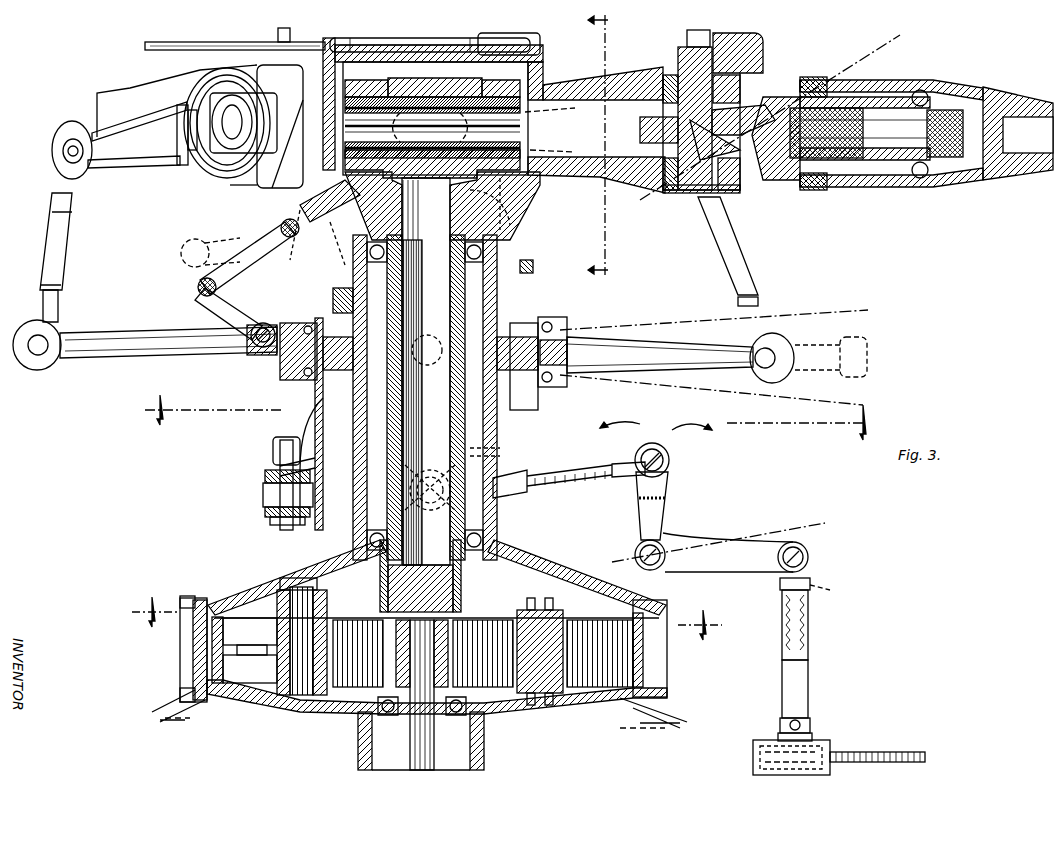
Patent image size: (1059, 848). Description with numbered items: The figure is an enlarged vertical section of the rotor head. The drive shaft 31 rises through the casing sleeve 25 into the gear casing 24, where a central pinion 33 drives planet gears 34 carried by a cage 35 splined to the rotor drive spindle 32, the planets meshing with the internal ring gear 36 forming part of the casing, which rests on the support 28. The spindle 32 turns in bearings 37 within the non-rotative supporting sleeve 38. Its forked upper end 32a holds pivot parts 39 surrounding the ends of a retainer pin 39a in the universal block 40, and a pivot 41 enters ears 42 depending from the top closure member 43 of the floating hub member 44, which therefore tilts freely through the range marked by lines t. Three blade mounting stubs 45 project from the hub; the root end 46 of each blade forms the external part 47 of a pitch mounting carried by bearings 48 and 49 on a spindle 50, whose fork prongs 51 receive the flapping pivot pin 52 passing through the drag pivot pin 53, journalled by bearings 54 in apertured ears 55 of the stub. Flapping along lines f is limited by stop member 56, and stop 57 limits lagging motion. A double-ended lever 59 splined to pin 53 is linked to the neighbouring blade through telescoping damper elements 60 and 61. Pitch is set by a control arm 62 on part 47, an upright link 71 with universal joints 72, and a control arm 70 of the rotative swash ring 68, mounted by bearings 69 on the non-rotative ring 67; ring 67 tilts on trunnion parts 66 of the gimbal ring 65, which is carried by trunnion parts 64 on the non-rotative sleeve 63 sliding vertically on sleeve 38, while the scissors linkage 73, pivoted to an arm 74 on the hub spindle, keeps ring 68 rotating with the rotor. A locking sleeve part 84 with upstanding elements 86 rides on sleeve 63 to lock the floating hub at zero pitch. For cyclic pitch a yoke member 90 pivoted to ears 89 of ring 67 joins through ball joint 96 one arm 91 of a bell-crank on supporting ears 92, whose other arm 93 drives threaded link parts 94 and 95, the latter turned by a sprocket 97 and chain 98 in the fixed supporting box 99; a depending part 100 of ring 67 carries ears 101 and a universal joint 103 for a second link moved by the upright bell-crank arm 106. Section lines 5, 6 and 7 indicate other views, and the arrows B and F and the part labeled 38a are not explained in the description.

The gear casing 24 is at (235, 590).
The casing sleeve 25 is at (358, 750).
The support 28 is at (168, 700).
The shaft 31 is at (410, 760).
The rotor drive spindle 32 is at (445, 378).
The forks 32a is at (325, 80).
The central pinion 33 is at (396, 662).
The planet gears 34 is at (220, 690).
The cage 35 is at (325, 592).
The internal ring gear 36 is at (633, 658).
The bearings 37 is at (500, 256).
The non-rotative supporting sleeve 38 is at (470, 485).
The cap housing 38a is at (543, 70).
The pivot parts 39 is at (405, 85).
The retainer pin 39a is at (500, 205).
The universal block 40 is at (530, 190).
The pivot 41 is at (470, 90).
The ears 42 is at (440, 90).
The top closure member 43 is at (385, 48).
The floating hub member 44 is at (283, 178).
The blade mounting stubs 45 is at (580, 100).
The root end of the blade 46 is at (118, 88).
The external part of pitch mounting 47 is at (942, 182).
The bearing 48 is at (825, 85).
The bearing 49 is at (922, 90).
The spindle 50 is at (865, 178).
The fork prongs 51 is at (750, 150).
The flapping pivot pin 52 is at (230, 140).
The drag pivot pin 53 is at (690, 70).
The bearings 54 is at (740, 95).
The apertured ears 55 is at (745, 75).
The stop member 56 is at (768, 130).
The stop 57 is at (640, 130).
The double-ended lever 59 is at (228, 44).
The telescoping element 60 is at (435, 40).
The telescoping element 61 is at (522, 40).
The control arm 62 is at (133, 153).
The non-rotative sleeve 63 is at (327, 410).
The trunnion parts 64 is at (342, 372).
The gimbal ring 65 is at (322, 322).
The trunnion parts 66 is at (430, 335).
The non-rotative ring 67 is at (538, 400).
The rotative swash ring 68 is at (560, 328).
The bearings 69 is at (550, 323).
The control arms 70 is at (112, 343).
The upright link 71 is at (62, 226).
The ball or universal joints 72 is at (58, 146).
The scissors linkage 73 is at (247, 272).
The arm 74 is at (335, 210).
The sleeve part 84 is at (533, 266).
The upstanding elements 86 is at (334, 290).
The ears 89 is at (500, 452).
The yoke member 90 is at (535, 476).
The bell-crank arm 91 is at (660, 507).
The supporting ears 92 is at (635, 548).
The bell-crank arm 93 is at (742, 545).
The link part 94 is at (810, 600).
The link part 95 is at (810, 686).
The ball or universal joint 96 is at (670, 462).
The sprocket 97 is at (808, 752).
The chain 98 is at (882, 752).
The fixed supporting box 99 is at (753, 758).
The depending part 100 is at (318, 468).
The ears 101 is at (268, 472).
The universal joint 103 is at (265, 490).
The upright bell-crank arm 106 is at (275, 522).
The section line 5 is at (512, 415).
The section line 6 is at (427, 613).
The section line 7 is at (609, 146).
The flapping movement lines f is at (735, 289).
The tilting movement lines t is at (554, 129).
The direction arrow B is at (620, 415).
The direction arrow F is at (692, 416).